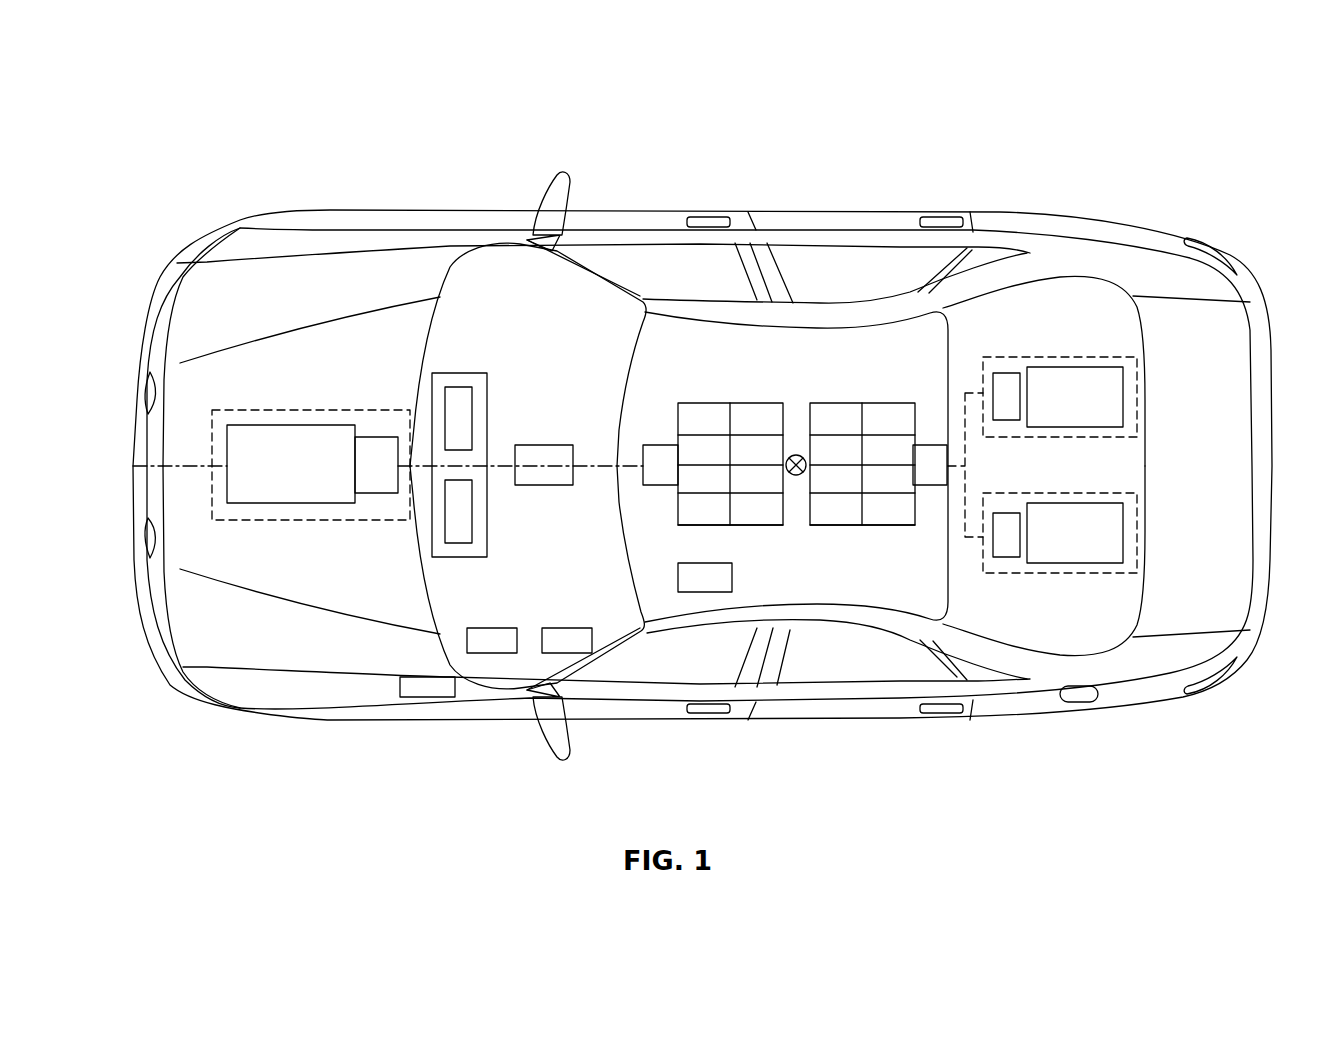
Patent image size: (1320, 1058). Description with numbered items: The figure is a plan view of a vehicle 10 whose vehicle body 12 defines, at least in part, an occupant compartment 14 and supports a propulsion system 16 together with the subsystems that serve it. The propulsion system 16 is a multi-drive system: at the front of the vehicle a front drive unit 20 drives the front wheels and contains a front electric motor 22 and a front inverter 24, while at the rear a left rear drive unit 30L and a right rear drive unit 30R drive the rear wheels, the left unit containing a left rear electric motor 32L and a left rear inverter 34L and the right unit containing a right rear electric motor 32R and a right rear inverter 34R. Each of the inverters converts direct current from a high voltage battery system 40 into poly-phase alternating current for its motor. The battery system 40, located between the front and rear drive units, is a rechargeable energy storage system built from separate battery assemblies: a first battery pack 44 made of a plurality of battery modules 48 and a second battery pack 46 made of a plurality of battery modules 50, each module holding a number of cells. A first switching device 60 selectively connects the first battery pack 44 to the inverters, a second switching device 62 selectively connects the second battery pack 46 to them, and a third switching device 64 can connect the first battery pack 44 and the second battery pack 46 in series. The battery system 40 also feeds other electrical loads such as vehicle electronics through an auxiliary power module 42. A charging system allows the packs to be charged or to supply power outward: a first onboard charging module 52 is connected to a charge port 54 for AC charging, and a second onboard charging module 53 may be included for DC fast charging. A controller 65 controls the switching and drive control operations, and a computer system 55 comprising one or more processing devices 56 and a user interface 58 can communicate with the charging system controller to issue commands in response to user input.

The vehicle 10 is at (226, 106).
The vehicle body 12 is at (760, 203).
The occupant compartment 14 is at (827, 617).
The propulsion system 16 is at (282, 578).
The front drive unit 20 is at (340, 410).
The front electric motor 22 is at (290, 424).
The front inverter 24 is at (380, 494).
The right rear drive unit 30R is at (1137, 390).
The left rear drive unit 30L is at (1137, 527).
The right rear electric motor 32R is at (1075, 366).
The left rear electric motor 32L is at (1050, 564).
The right rear inverter 34R is at (1000, 372).
The left rear inverter 34L is at (1000, 558).
The high voltage battery system 40 is at (793, 438).
The auxiliary power module 42 is at (710, 562).
The first battery pack 44 is at (757, 527).
The second battery pack 46 is at (843, 527).
The battery modules 48 is at (757, 420).
The battery modules 50 is at (823, 418).
The first onboard charging module 52 is at (567, 627).
The second onboard charging module 53 is at (493, 627).
The charge port 54 is at (427, 676).
The computer system 55 is at (461, 350).
The processing devices 56 is at (473, 417).
The user interface 58 is at (473, 512).
The first switching device 60 is at (666, 444).
The second switching device 62 is at (937, 444).
The third switching device 64 is at (797, 478).
The controller 65 is at (540, 444).